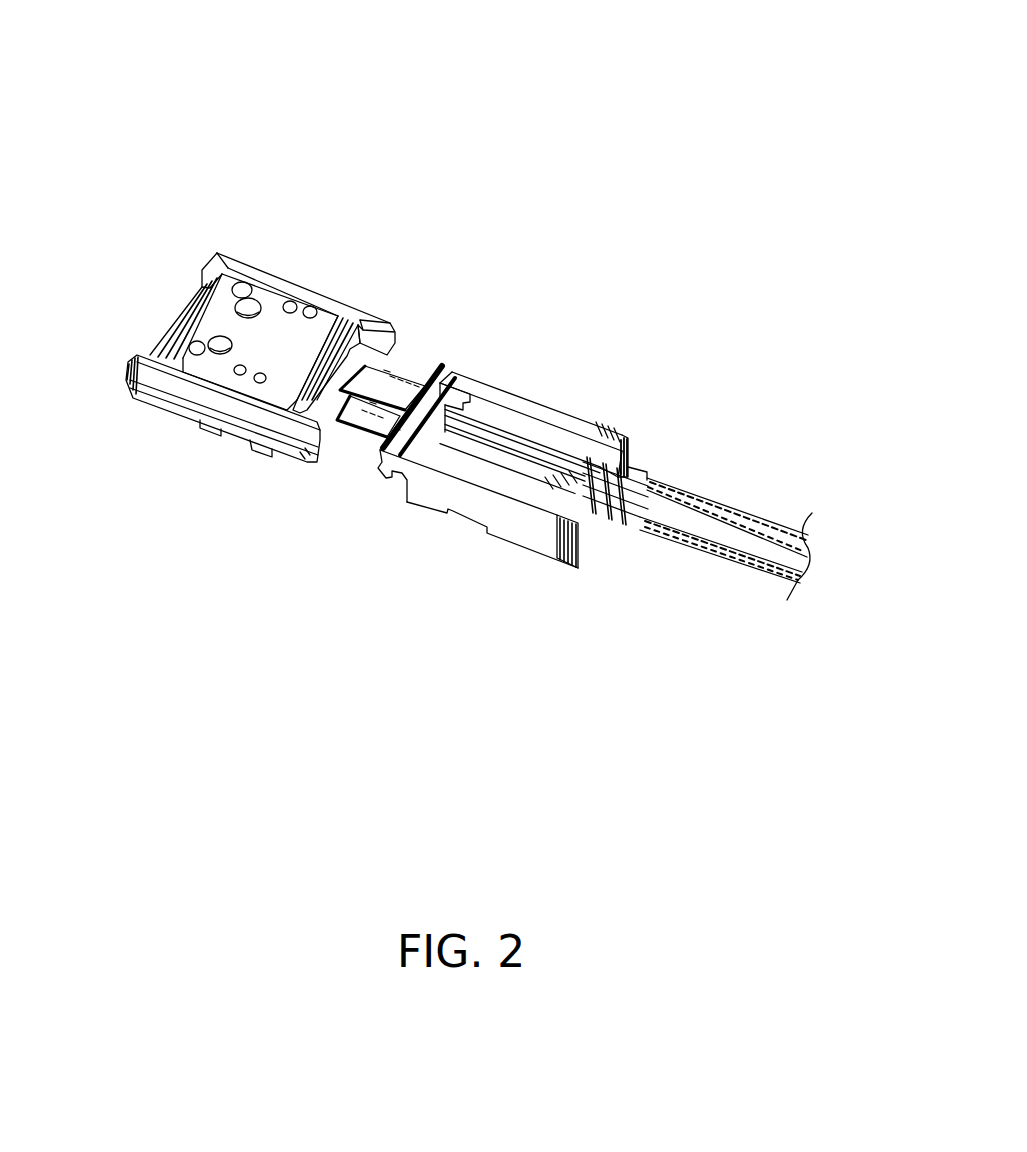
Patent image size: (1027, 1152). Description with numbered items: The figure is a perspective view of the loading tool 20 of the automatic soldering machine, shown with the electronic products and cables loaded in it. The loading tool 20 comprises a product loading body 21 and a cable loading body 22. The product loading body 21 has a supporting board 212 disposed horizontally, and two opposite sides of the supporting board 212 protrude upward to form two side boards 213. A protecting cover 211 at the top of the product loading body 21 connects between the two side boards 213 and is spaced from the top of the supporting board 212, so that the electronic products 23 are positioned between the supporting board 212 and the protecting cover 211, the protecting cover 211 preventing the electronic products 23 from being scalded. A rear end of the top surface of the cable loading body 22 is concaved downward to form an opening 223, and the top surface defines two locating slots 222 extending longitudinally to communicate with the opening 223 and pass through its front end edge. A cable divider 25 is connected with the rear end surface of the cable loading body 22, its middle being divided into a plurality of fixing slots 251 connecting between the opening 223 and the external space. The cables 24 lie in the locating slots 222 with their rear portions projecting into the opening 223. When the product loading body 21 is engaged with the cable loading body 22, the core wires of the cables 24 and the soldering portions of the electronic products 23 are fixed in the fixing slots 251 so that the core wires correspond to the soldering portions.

The connector assembly 20 is at (200, 48).
The product loading body 21 is at (283, 305).
The protecting cover 211 is at (283, 367).
The supporting board 212 is at (185, 340).
The side boards 213 is at (135, 378).
The cable loading body 22 is at (515, 418).
The locating slots 222 is at (543, 480).
The opening 223 is at (410, 450).
The electronic products 23 is at (417, 377).
The cables 24 is at (675, 490).
The cable divider 25 is at (383, 450).
The fixing slots 251 is at (445, 368).